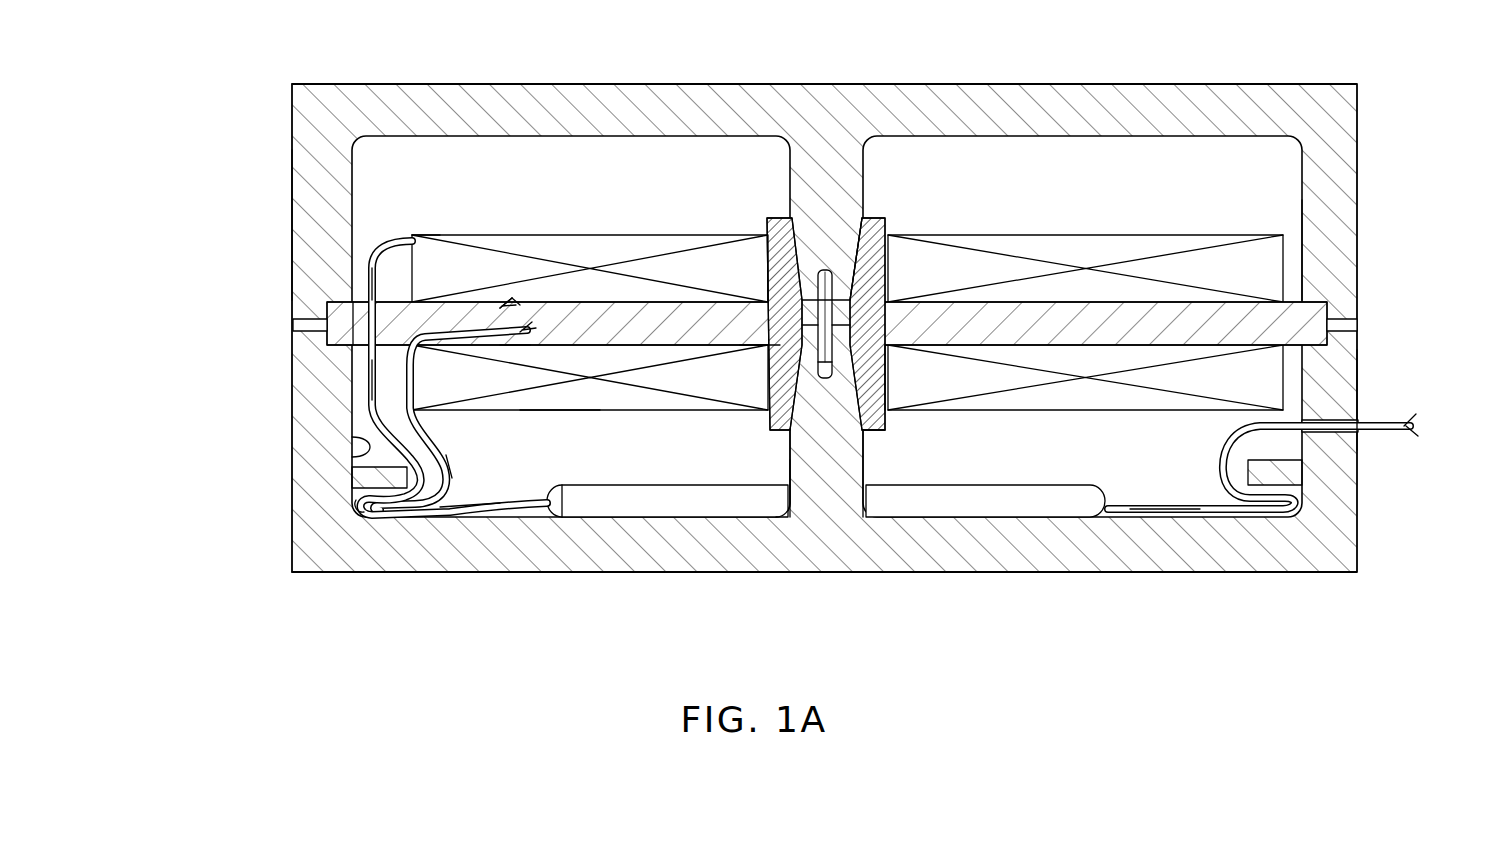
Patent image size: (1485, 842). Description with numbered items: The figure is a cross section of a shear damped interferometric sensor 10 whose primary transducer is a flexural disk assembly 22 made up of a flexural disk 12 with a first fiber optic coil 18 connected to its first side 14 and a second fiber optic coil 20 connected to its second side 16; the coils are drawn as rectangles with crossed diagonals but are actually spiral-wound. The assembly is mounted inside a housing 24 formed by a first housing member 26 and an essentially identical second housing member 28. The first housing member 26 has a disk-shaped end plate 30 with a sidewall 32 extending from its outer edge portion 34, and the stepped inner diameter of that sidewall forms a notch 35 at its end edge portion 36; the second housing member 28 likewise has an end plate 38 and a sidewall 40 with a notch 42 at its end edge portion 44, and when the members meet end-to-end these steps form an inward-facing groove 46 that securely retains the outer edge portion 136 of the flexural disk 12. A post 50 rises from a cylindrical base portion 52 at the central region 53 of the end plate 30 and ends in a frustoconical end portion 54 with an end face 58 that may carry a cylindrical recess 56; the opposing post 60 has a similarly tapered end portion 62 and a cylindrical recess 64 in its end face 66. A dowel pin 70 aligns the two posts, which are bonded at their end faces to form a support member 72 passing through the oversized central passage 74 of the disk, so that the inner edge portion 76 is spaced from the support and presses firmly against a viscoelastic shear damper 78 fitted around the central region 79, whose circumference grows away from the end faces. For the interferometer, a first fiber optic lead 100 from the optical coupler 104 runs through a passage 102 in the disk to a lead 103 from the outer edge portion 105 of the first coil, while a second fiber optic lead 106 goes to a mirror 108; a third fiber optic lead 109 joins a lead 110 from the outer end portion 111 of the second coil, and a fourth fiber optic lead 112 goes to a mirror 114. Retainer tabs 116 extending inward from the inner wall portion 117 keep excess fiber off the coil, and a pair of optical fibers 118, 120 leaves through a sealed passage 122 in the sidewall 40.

The interferometric sensor 10 is at (1062, 646).
The flexural disk 12 is at (1190, 347).
The first side 14 is at (1110, 302).
The second side 16 is at (1110, 347).
The first fiber optic coil 18 is at (592, 235).
The second fiber optic coil 20 is at (557, 412).
The flexural disk assembly 22 is at (488, 160).
The housing 24 is at (255, 493).
The first housing member 26 is at (292, 100).
The second housing member 28 is at (292, 565).
The end plate 30 is at (560, 84).
The sidewall 32 is at (292, 225).
The outer edge portion 34 is at (322, 84).
The notch 35 is at (327, 317).
The end edge portion 36 is at (255, 305).
The end plate 38 is at (1140, 572).
The sidewall 40 is at (1357, 396).
The notch 42 is at (1330, 300).
The end edge portion 44 is at (1380, 325).
The groove 46 is at (347, 348).
The post 50 is at (870, 146).
The base portion 52 is at (782, 146).
The central region 53 is at (830, 84).
The end portion 54 is at (888, 262).
The cylindrical recess 56 is at (775, 300).
The end face 58 is at (796, 380).
The post 60 is at (785, 465).
The end portion 62 is at (862, 335).
The cylindrical recess 64 is at (842, 380).
The end face 66 is at (848, 373).
The dowel pin 70 is at (832, 350).
The support member 72 is at (768, 208).
The central passage 74 is at (888, 357).
The inner edge portion 76 is at (690, 362).
The shear damper 78 is at (890, 272).
The central region 79 is at (740, 392).
The first fiber optic lead 100 is at (373, 413).
The passage 102 is at (353, 300).
The lead 103 is at (375, 250).
The optical coupler 104 is at (657, 500).
The outer edge portion 105 is at (414, 238).
The second fiber optic lead 106 is at (505, 305).
The mirror 108 is at (500, 306).
The third fiber optic lead 109 is at (470, 494).
The lead 110 is at (428, 430).
The outer end portion 111 is at (407, 463).
The fourth fiber optic lead 112 is at (370, 384).
The mirror 114 is at (512, 350).
The retainer tabs 116 is at (372, 520).
The inner wall portion 117 is at (467, 400).
The optical fiber 118 is at (1177, 507).
The optical fiber 120 is at (1245, 505).
The passage 122 is at (1330, 420).
The outer edge portion 136 is at (1325, 300).